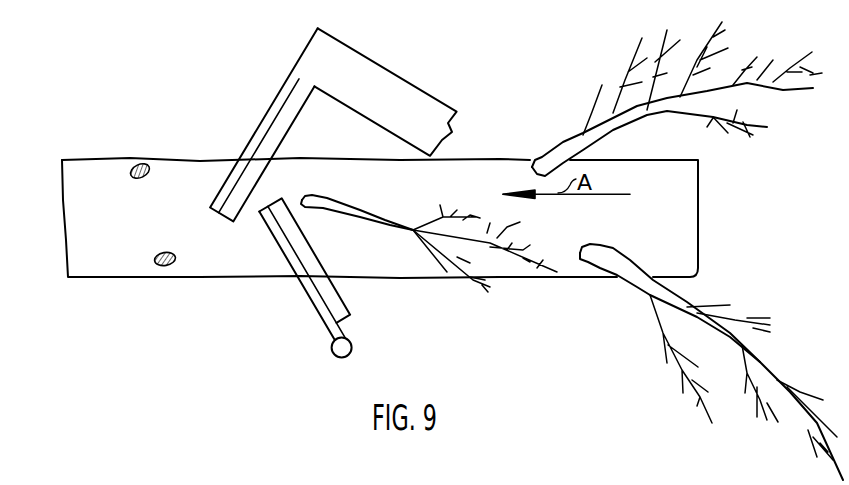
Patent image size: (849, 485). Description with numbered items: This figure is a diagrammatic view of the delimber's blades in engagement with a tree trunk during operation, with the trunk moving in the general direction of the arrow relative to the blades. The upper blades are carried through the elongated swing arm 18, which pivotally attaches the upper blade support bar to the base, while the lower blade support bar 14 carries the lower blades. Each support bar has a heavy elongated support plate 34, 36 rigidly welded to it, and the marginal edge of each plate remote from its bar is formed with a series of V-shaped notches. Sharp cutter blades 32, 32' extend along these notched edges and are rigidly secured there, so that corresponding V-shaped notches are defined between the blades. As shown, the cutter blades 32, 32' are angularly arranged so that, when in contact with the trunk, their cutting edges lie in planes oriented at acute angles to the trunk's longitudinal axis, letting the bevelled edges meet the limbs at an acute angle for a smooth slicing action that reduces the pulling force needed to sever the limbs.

The lower blade support bar 14 is at (349, 341).
The swing arm 18 is at (390, 90).
The lower cutter blade 32 is at (304, 260).
The upper cutter blade 32' is at (259, 146).
The lower support plate 34 is at (319, 306).
The upper support plate 36 is at (255, 142).